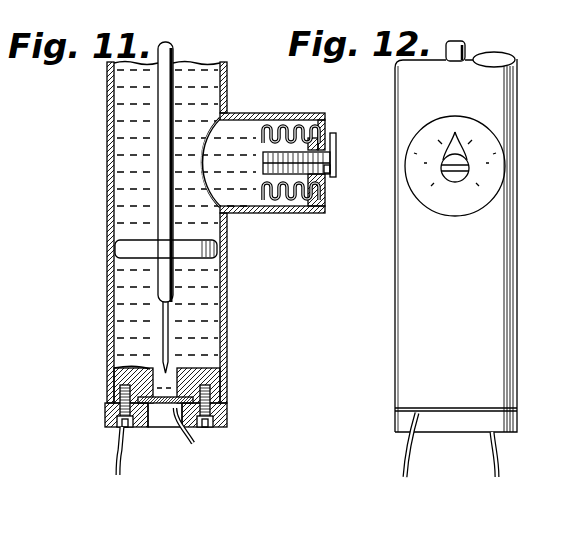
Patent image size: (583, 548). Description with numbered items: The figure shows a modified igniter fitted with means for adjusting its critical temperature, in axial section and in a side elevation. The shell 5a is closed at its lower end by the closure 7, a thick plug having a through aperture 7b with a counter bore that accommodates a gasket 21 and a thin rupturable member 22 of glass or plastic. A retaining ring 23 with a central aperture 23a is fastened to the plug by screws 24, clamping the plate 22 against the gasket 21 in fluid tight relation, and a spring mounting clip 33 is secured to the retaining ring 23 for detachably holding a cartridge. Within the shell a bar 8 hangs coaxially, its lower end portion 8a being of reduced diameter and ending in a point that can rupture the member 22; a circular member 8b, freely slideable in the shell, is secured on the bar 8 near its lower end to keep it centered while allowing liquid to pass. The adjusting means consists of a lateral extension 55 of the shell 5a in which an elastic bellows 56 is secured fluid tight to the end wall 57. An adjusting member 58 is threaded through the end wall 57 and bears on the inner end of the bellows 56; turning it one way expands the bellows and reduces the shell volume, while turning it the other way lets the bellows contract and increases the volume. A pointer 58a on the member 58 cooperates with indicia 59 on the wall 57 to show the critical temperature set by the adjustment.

In FIG. 11, the shell 5a is at (227, 81).
In FIG. 12, the shell 5a is at (410, 92).
In FIG. 11, the closure 7 is at (222, 383).
In FIG. 11, the through aperture 7b is at (118, 367).
In FIG. 11, the bar 8 is at (176, 47).
In FIG. 12, the bar 8 is at (455, 51).
In FIG. 11, the lower end portion of the bar 8a is at (170, 326).
In FIG. 11, the circular member 8b is at (115, 249).
In FIG. 11, the gasket 21 is at (125, 396).
In FIG. 11, the rupturable member 22 is at (196, 433).
In FIG. 11, the retaining ring 23 is at (228, 412).
In FIG. 12, the retaining ring 23 is at (398, 416).
In FIG. 11, the central aperture 23a is at (157, 420).
In FIG. 11, the screws 24 is at (250, 436).
In FIG. 11, the spring mounting clip 33 is at (116, 455).
In FIG. 12, the spring mounting clip 33 is at (500, 450).
In FIG. 11, the lateral extension 55 is at (292, 113).
In FIG. 12, the lateral extension 55 is at (502, 136).
In FIG. 11, the bellows 56 is at (280, 203).
In FIG. 11, the end wall 57 is at (325, 204).
In FIG. 12, the end wall 57 is at (505, 180).
In FIG. 11, the adjusting member 58 is at (328, 157).
In FIG. 12, the adjusting member 58 is at (455, 183).
In FIG. 11, the pointer 58a is at (336, 136).
In FIG. 12, the pointer 58a is at (455, 132).
In FIG. 12, the indicia 59 is at (410, 182).